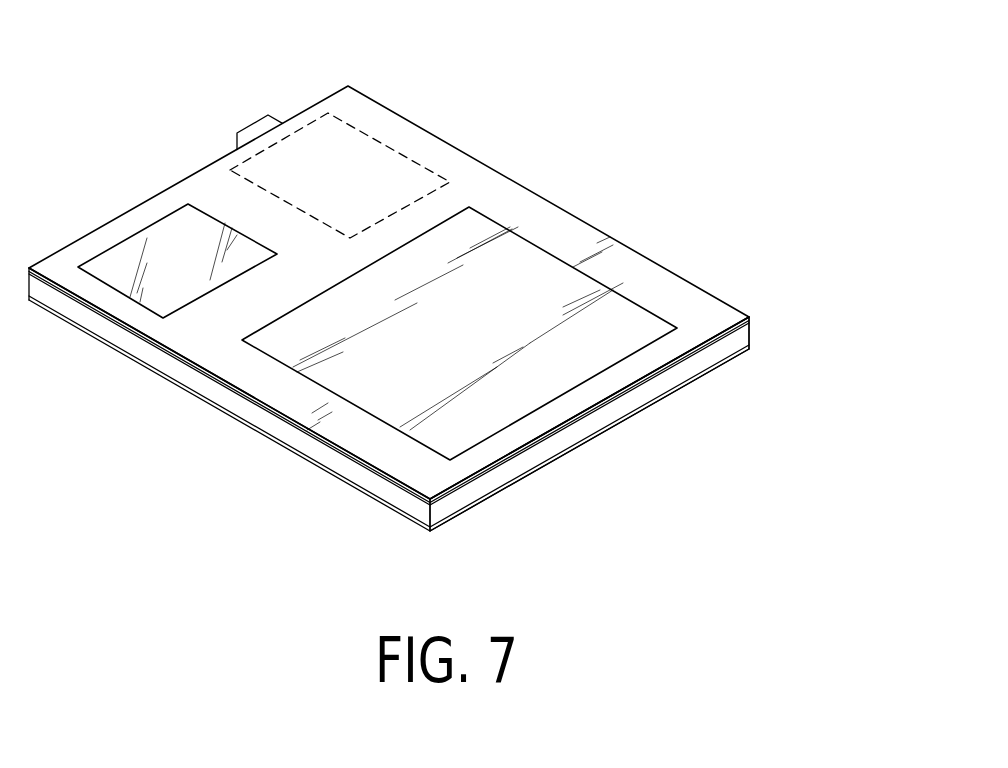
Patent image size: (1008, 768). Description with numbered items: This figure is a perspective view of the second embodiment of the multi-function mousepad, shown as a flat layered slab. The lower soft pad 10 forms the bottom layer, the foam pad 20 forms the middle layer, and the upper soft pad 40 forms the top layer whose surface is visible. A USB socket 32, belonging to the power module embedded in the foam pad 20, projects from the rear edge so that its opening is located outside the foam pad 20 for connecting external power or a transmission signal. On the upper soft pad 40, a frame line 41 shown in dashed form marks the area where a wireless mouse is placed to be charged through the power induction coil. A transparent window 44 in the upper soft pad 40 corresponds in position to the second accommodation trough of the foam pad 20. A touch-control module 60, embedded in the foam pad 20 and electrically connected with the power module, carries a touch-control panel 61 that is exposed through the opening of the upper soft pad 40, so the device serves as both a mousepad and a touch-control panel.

The lower soft pad 10 is at (602, 438).
The foam pad 20 is at (760, 335).
The USB socket 32 is at (252, 123).
The upper soft pad 40 is at (513, 165).
The frame line 41 is at (413, 160).
The transparent window 44 is at (117, 265).
The touch-control module 60 is at (576, 248).
The touch-control panel 61 is at (610, 327).